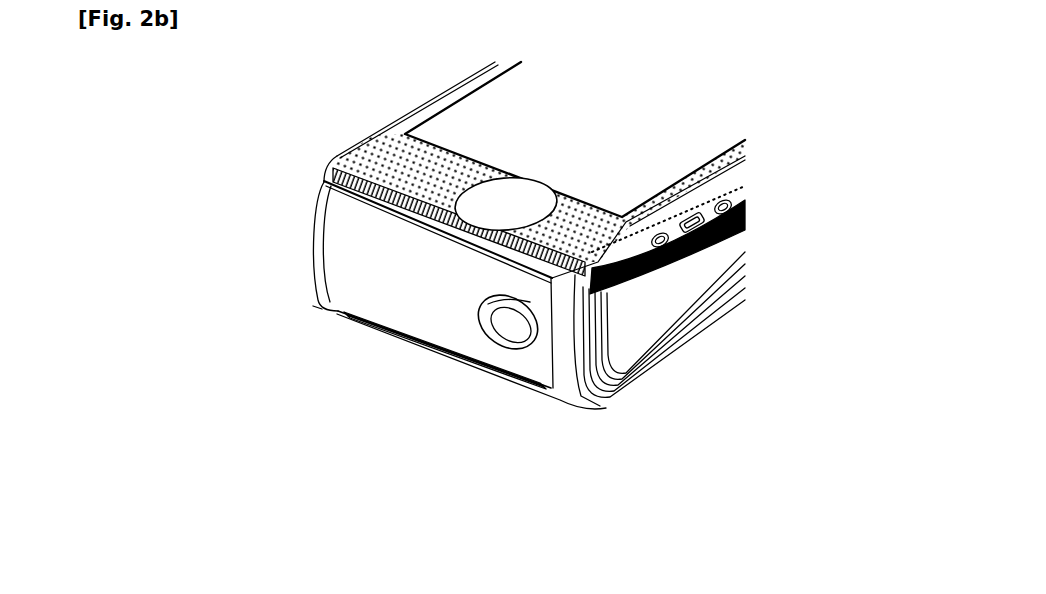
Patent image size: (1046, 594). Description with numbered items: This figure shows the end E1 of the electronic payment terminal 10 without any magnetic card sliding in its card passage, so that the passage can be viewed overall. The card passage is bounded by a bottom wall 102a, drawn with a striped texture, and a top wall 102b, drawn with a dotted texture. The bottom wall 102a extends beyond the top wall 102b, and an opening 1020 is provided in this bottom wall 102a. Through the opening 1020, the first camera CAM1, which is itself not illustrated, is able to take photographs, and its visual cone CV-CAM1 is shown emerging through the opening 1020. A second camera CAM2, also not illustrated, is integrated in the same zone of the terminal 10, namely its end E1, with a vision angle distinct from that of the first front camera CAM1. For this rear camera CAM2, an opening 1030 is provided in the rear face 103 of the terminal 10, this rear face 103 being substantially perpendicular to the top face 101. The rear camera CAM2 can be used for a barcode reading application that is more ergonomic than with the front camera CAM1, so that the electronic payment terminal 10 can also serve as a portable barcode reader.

The electronic payment terminal 10 is at (548, 408).
The top face 101 is at (548, 68).
The bottom wall 102a is at (323, 165).
The top wall 102b is at (424, 164).
The opening 1020 is at (490, 250).
The rear face 103 is at (452, 318).
The opening 1030 is at (485, 336).
The first camera CAM1 is at (479, 284).
The second camera CAM2 is at (550, 294).
The visual cone CV-CAM1 is at (538, 204).
The end E1 is at (616, 435).